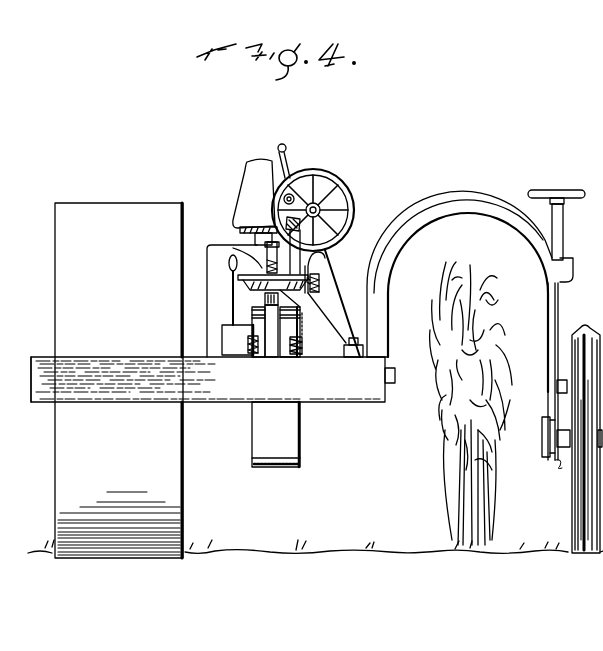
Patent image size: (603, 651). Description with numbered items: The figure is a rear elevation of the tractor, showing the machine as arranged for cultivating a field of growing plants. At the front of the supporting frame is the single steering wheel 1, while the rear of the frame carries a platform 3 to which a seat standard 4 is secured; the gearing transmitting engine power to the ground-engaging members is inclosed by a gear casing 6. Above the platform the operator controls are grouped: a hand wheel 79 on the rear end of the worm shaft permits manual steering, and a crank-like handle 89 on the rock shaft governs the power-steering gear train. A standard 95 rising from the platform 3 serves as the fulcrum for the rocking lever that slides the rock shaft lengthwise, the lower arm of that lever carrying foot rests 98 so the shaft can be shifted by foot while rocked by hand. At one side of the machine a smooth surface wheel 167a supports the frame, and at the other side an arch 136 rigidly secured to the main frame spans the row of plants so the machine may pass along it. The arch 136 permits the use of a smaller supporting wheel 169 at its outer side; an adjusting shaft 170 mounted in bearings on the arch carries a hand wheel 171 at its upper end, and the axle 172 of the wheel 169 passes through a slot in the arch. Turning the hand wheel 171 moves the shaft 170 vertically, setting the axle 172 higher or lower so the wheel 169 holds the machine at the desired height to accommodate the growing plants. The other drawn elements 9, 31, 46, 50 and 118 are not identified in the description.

The steering wheel 1 is at (290, 450).
The platform 3 is at (350, 394).
The seat standard 4 is at (277, 337).
The gear casing 6 is at (212, 242).
The platform end 9 is at (31, 360).
The plate 31 is at (232, 302).
The motor housing 46 is at (256, 176).
The plunger 50 is at (225, 250).
The hand wheel 79 is at (344, 190).
The handle 89 is at (290, 152).
The standard 95 is at (348, 337).
The foot rests 98 is at (344, 290).
The springs 118 is at (240, 349).
The arch 136 is at (463, 193).
The smooth surface wheel 167a is at (119, 380).
The supporting wheel 169 is at (580, 512).
The adjusting shaft 170 is at (560, 233).
The hand wheel 171 is at (553, 190).
The axle 172 is at (557, 466).